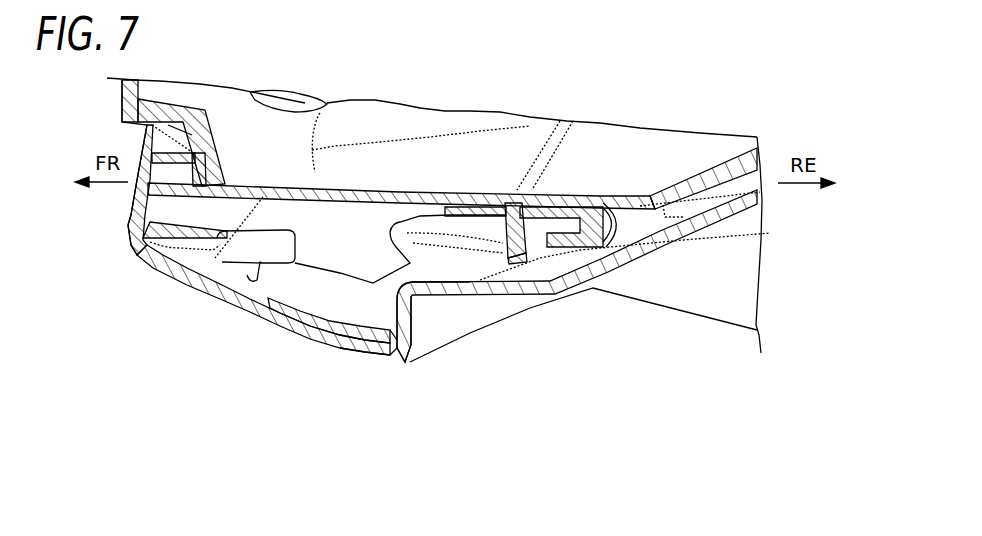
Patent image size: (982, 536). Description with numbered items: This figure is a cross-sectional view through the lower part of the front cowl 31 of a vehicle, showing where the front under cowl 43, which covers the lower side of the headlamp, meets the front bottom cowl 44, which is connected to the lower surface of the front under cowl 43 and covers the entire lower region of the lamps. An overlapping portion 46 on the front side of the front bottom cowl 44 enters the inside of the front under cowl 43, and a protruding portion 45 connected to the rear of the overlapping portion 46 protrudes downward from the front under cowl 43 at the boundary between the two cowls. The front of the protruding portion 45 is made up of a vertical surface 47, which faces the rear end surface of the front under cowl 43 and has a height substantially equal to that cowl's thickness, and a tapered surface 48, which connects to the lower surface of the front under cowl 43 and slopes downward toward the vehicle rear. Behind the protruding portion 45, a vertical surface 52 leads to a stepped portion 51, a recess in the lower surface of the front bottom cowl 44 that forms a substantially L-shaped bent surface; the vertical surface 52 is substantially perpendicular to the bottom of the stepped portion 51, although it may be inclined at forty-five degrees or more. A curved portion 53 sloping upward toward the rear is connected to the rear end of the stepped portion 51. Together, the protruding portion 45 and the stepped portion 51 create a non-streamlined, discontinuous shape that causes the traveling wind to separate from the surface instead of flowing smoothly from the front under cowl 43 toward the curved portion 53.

The front cowl 31 is at (176, 334).
The front under cowl 43 is at (288, 324).
The front bottom cowl 44 is at (588, 302).
The protruding portion 45 is at (406, 352).
The overlapping portion 46 is at (334, 346).
The vertical surface 47 is at (370, 353).
The tapered surface 48 is at (394, 352).
The stepped portion 51 is at (440, 300).
The vertical surface 52 is at (426, 305).
The curved portion 53 is at (705, 240).